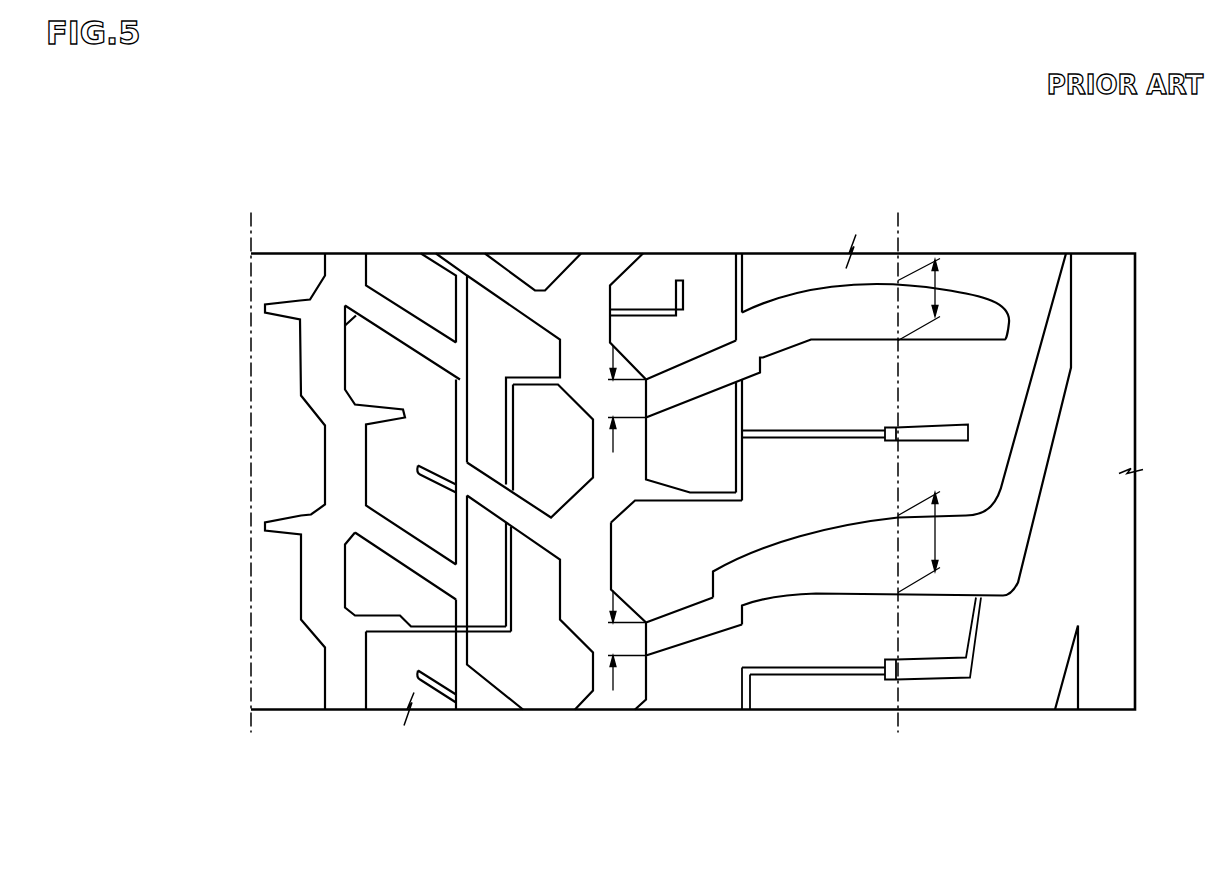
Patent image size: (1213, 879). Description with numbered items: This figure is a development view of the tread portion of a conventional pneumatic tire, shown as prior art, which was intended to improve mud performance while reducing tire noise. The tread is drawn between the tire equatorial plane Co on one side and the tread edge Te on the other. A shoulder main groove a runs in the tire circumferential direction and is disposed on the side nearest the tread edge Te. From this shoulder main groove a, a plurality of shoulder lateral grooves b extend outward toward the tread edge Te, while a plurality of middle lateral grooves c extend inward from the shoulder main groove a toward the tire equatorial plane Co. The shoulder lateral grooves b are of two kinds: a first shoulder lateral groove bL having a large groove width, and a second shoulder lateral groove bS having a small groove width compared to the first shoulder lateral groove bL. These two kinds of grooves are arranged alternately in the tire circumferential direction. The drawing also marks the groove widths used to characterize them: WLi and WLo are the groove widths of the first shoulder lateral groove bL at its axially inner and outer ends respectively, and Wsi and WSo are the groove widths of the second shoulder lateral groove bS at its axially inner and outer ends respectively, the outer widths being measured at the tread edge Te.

The shoulder main groove a is at (593, 282).
The middle lateral grooves c is at (545, 528).
The shoulder lateral grooves b is at (861, 553).
The first shoulder lateral groove bL is at (780, 563).
The second shoulder lateral groove bS is at (835, 308).
The tire equatorial plane Co is at (250, 461).
The tread edge Te is at (895, 227).
The groove width of second shoulder lateral groove at axially outer end WSo is at (948, 300).
The groove width of first shoulder lateral groove at axially outer end WLo is at (946, 542).
The groove width of second shoulder lateral groove at axially inner end Wsi is at (620, 399).
The groove width of first shoulder lateral groove at axially inner end WLi is at (617, 641).